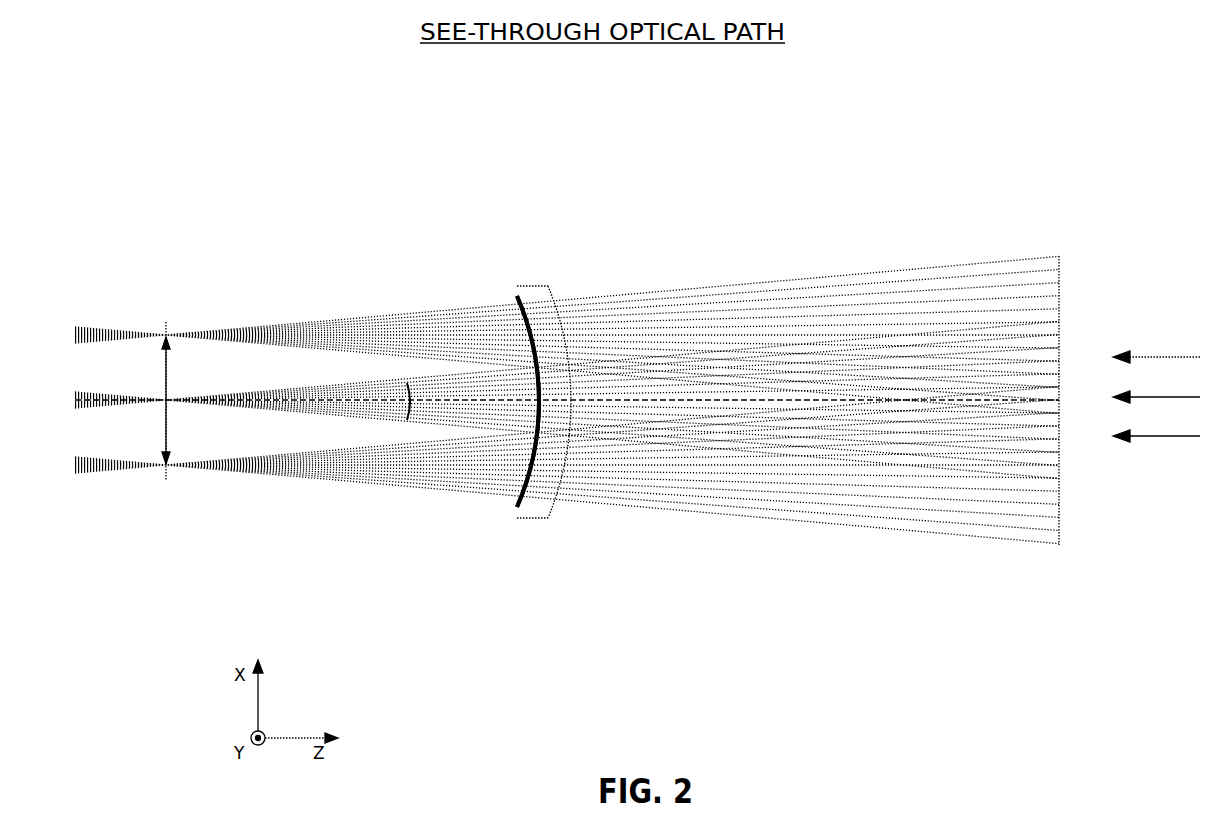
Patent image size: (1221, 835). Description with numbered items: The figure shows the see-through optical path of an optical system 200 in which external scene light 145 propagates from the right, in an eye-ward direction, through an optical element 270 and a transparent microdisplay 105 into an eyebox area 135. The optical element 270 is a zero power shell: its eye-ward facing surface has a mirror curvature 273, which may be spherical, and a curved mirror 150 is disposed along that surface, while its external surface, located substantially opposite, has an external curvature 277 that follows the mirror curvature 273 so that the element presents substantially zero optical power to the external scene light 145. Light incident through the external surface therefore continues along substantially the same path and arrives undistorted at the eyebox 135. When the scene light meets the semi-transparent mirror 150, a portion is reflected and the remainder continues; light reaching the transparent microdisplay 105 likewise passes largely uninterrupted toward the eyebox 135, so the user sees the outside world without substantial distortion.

The optical system 200 is at (196, 104).
The transparent microdisplay 105 is at (406, 417).
The eyebox area 135 is at (160, 417).
The external scene light 145 is at (1172, 357).
The curved mirror 150 is at (516, 508).
The optical element 270 is at (535, 520).
The mirror curvature 273 is at (516, 298).
The external curvature 277 is at (548, 290).